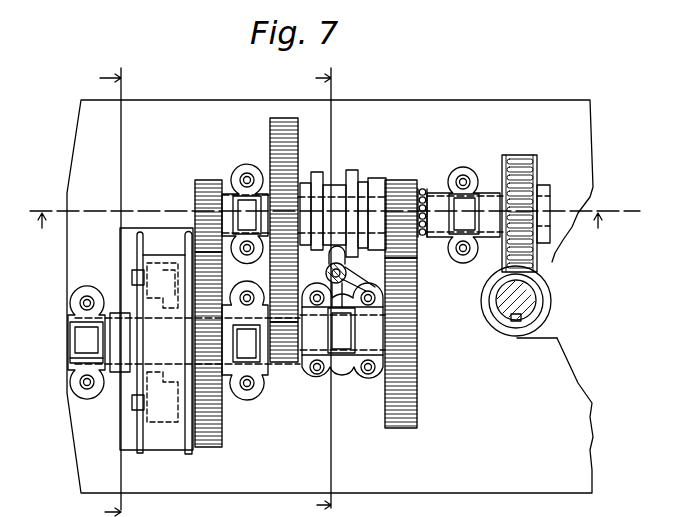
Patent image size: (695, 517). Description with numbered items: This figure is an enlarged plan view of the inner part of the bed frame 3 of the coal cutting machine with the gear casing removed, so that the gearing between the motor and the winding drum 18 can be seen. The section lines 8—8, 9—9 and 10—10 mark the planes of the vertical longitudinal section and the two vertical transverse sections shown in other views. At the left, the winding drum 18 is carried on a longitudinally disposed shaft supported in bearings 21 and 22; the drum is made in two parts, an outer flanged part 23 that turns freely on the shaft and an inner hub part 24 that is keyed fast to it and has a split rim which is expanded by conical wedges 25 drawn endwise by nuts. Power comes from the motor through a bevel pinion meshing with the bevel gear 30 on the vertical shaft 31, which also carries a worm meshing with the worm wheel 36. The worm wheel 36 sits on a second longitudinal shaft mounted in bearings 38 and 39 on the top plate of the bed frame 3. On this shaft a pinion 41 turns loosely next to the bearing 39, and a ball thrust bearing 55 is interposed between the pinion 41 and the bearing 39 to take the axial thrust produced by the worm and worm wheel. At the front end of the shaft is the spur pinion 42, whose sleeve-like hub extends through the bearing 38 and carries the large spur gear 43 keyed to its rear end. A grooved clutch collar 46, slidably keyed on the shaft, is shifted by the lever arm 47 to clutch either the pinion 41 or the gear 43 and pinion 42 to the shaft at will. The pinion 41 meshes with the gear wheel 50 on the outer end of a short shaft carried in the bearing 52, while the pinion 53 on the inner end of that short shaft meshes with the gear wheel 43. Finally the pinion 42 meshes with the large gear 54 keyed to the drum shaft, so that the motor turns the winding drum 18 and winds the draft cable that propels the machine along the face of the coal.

The bed frame 3 is at (572, 458).
The line 8— 8 is at (329, 216).
The line 9— 9 is at (111, 283).
The line 10— 10 is at (333, 282).
The winding drum 18 is at (180, 422).
The bearing 21 is at (80, 345).
The bearing 22 is at (255, 343).
The outer flanged part 23 is at (155, 257).
The inner hub part 24 is at (128, 317).
The conical wedges 25 is at (128, 437).
The bevel gear 30 is at (547, 302).
The vertical shaft 31 is at (505, 303).
The worm wheel 36 is at (537, 158).
The bearing 38 is at (230, 187).
The bearing 39 is at (487, 190).
The pinion 41 is at (400, 190).
The spur pinion 42 is at (202, 188).
The large spur gear 43 is at (285, 127).
The grooved clutch collar 46 is at (352, 175).
The lever arm 47 is at (347, 268).
The gear wheel 50 is at (410, 408).
The bearing 52 is at (372, 337).
The pinion 53 is at (292, 348).
The large gear 54 is at (218, 423).
The ball thrust bearing 55 is at (423, 189).